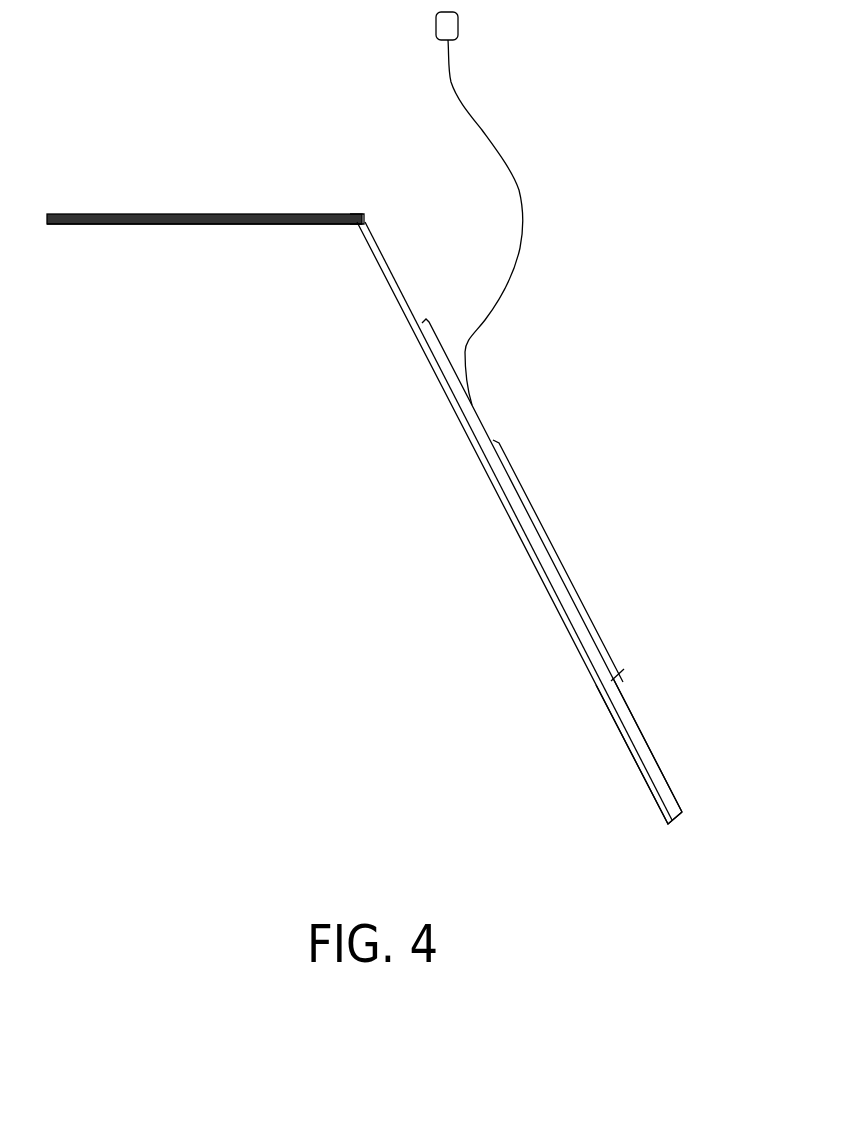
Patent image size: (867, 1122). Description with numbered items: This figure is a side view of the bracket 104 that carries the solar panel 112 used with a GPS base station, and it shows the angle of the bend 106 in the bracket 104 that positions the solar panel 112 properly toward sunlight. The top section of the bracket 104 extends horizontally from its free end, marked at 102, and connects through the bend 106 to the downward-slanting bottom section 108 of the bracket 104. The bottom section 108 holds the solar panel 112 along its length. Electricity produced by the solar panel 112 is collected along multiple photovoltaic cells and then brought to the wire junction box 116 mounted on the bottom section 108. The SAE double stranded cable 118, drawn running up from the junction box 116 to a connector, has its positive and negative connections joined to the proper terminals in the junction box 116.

The horizontal bar / handle 102 is at (72, 220).
The bracket 104 is at (182, 225).
The bend 106 is at (364, 212).
The bottom section 108 is at (398, 305).
The solar panel 112 is at (613, 723).
The wire junction box 116 is at (547, 543).
The SAE double stranded cable 118 is at (524, 232).